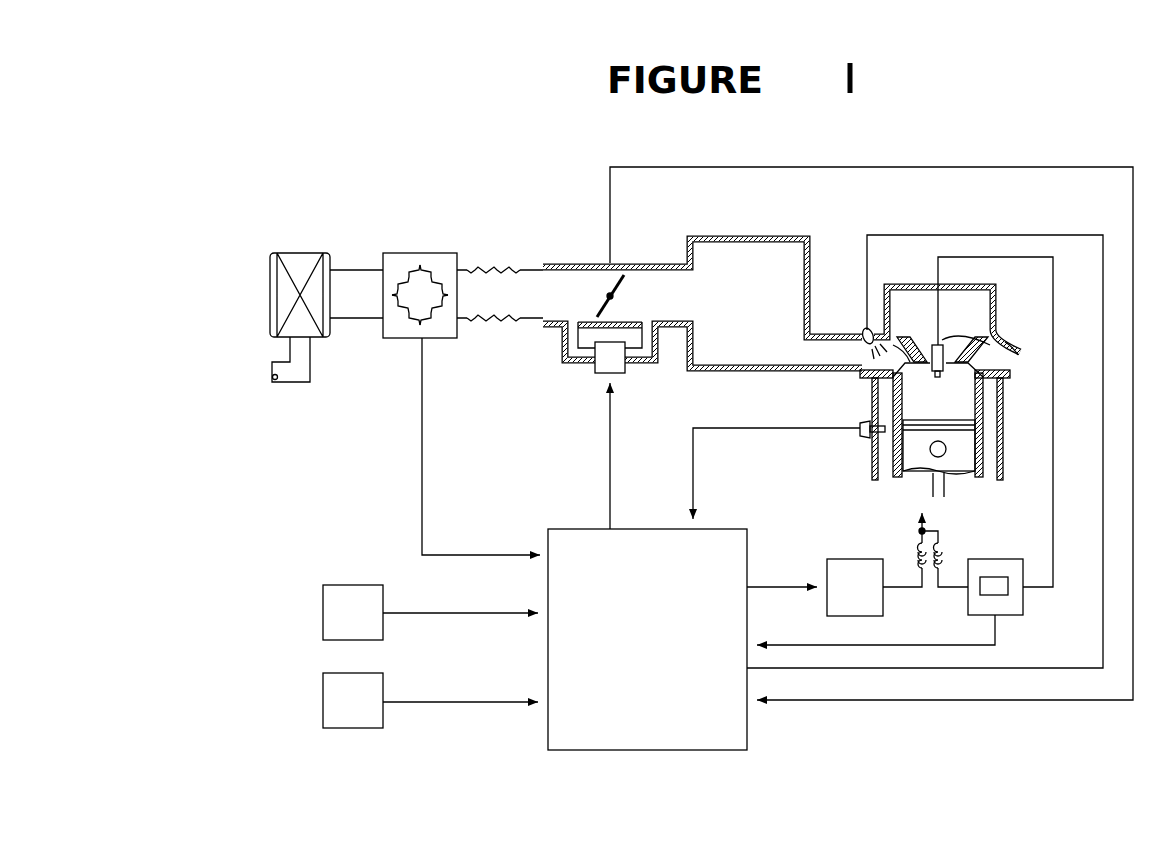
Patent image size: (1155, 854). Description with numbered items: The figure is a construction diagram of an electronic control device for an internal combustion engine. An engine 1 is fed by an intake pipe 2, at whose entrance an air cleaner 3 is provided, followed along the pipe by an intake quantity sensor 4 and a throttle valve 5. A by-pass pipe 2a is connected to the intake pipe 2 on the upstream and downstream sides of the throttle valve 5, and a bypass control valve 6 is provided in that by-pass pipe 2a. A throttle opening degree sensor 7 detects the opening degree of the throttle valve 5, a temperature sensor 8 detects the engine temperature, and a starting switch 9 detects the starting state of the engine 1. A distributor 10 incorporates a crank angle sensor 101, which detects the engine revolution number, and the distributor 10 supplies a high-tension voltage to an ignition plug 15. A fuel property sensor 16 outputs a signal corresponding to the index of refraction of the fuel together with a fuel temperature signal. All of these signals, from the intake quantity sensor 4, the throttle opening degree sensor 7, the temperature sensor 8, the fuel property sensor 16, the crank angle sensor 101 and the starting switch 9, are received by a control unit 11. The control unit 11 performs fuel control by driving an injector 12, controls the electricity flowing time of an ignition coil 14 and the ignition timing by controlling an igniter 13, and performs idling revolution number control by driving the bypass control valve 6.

The engine 1 is at (870, 403).
The intake pipe 2 is at (495, 290).
The by-pass pipe 2a is at (578, 357).
The air cleaner 3 is at (300, 253).
The intake quantity sensor 4 is at (415, 253).
The throttle valve 5 is at (626, 282).
The bypass control valve 6 is at (623, 365).
The throttle opening degree sensor 7 is at (610, 208).
The temperature sensor 8 is at (866, 438).
The starting switch 9 is at (350, 585).
The distributor 10 is at (1015, 559).
The crank angle sensor 101 is at (1008, 596).
The control unit 11 is at (548, 666).
The injector 12 is at (862, 330).
The igniter 13 is at (852, 559).
The ignition coil 14 is at (952, 560).
The ignition plug 15 is at (943, 345).
The fuel property sensor 16 is at (323, 687).